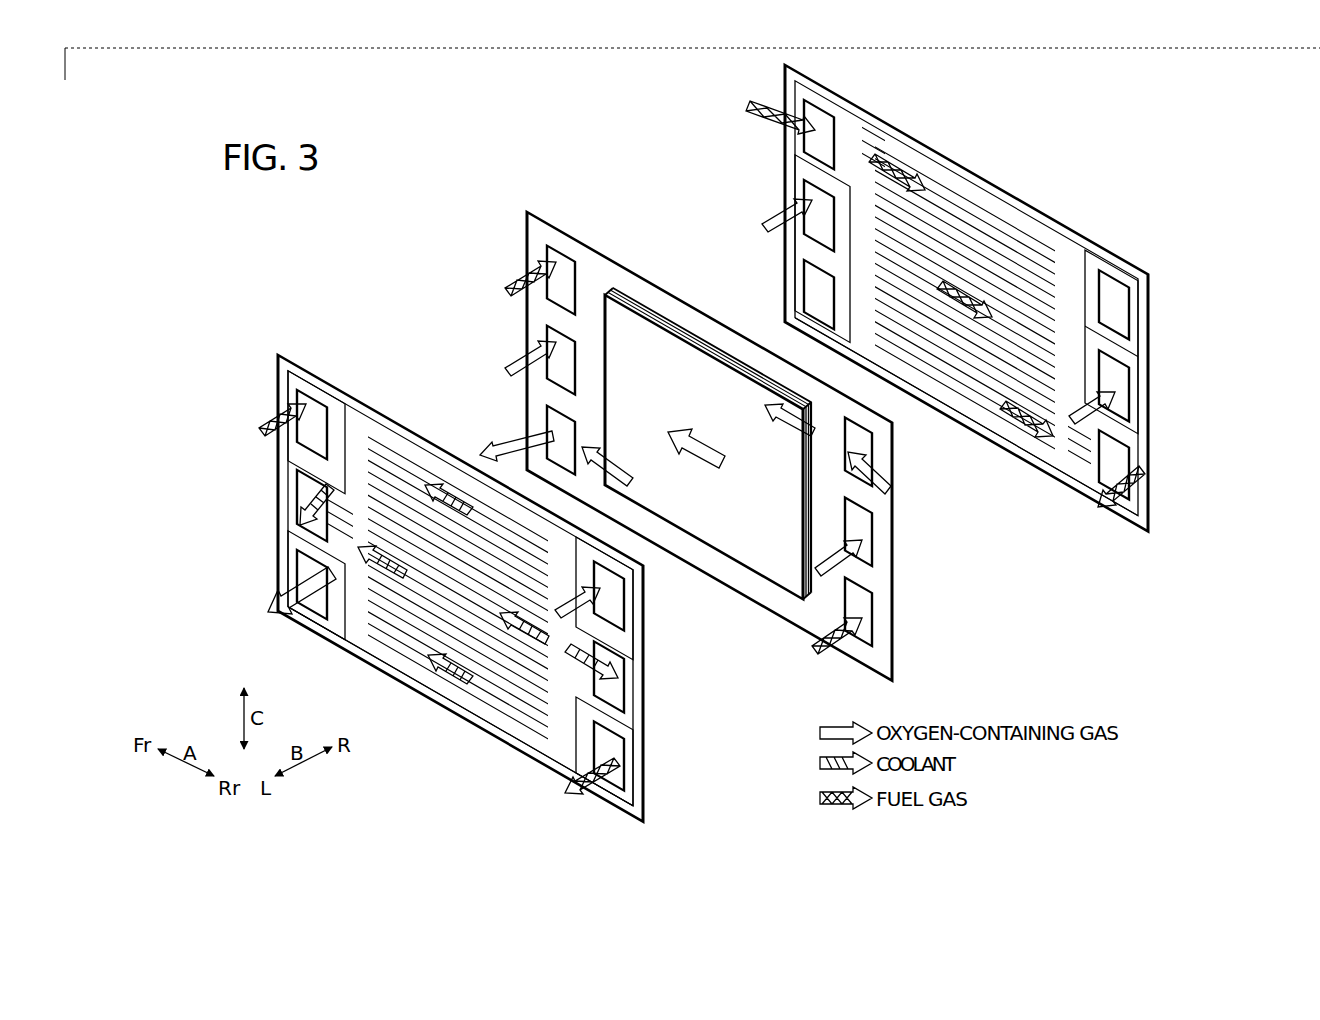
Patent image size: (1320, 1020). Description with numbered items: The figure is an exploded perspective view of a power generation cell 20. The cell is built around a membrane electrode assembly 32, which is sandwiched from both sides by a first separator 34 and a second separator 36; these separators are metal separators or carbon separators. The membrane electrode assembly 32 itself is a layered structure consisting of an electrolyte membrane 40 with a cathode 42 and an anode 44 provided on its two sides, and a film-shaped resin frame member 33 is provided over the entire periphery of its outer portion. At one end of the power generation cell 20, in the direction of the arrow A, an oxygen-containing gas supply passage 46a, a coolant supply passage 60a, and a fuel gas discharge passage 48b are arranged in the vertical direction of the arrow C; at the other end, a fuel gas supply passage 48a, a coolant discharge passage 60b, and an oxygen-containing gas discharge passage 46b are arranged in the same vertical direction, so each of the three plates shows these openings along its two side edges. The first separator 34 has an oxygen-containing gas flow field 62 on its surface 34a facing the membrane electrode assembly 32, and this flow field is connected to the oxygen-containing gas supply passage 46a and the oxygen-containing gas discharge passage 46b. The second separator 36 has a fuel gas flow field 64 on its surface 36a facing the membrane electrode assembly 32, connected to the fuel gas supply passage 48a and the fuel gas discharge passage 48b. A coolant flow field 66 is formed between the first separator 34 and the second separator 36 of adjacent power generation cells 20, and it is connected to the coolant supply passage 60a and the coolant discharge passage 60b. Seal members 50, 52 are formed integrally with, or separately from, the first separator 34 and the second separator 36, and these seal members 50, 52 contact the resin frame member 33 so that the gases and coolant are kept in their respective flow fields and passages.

The power generation cell 20 is at (378, 247).
The membrane electrode assembly 32 is at (708, 403).
The resin frame member 33 is at (612, 275).
The first separator 34 is at (276, 359).
The surface of first separator 34a is at (517, 728).
The second separator 36 is at (783, 76).
The surface of second separator 36a is at (1038, 442).
The electrolyte membrane 40 is at (707, 375).
The cathode 42 is at (648, 335).
The anode 44 is at (678, 323).
The oxygen-containing gas supply passage 46a is at (613, 610).
The oxygen-containing gas discharge passage 46b is at (303, 567).
The fuel gas supply passage 48a is at (303, 403).
The fuel gas discharge passage 48b is at (613, 753).
The seal member 50 is at (358, 413).
The seal member 52 is at (991, 190).
The coolant supply passage 60a is at (613, 687).
The coolant discharge passage 60b is at (303, 487).
The oxygen-containing gas flow field 62 is at (483, 658).
The fuel gas flow field 64 is at (993, 390).
The coolant flow field 66 is at (395, 630).